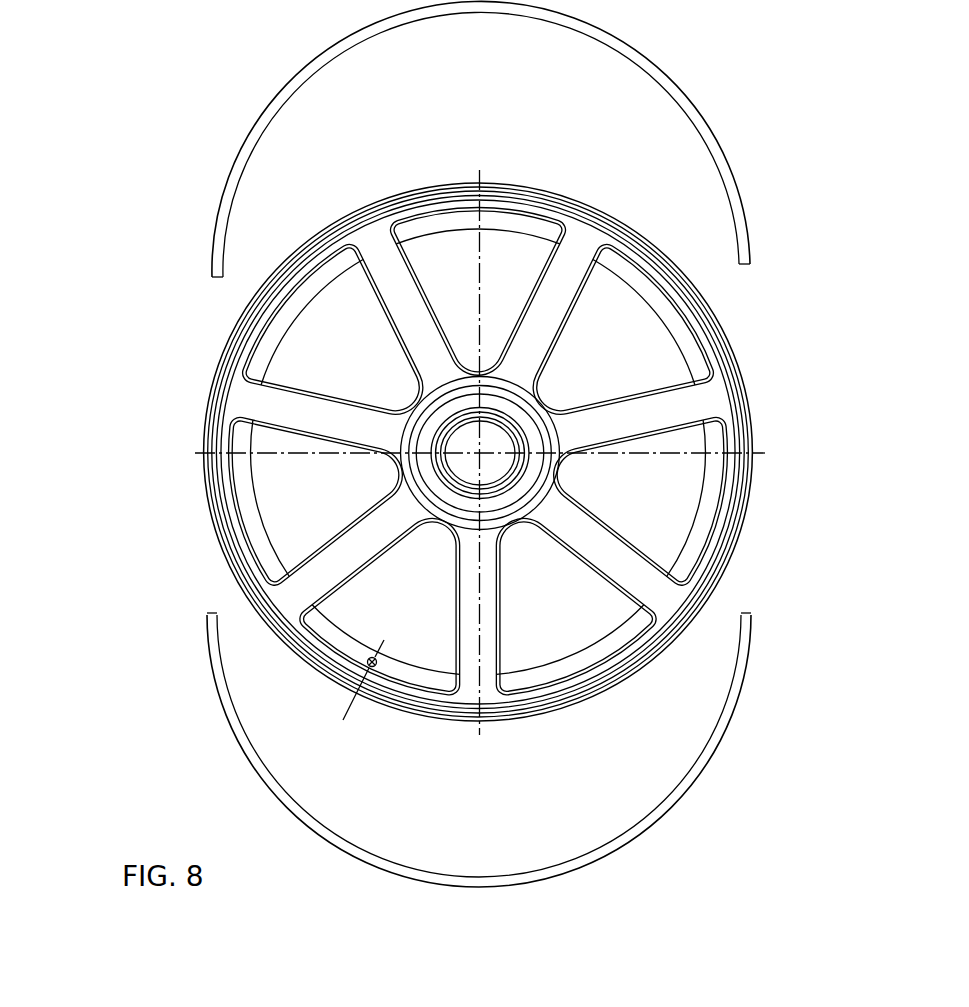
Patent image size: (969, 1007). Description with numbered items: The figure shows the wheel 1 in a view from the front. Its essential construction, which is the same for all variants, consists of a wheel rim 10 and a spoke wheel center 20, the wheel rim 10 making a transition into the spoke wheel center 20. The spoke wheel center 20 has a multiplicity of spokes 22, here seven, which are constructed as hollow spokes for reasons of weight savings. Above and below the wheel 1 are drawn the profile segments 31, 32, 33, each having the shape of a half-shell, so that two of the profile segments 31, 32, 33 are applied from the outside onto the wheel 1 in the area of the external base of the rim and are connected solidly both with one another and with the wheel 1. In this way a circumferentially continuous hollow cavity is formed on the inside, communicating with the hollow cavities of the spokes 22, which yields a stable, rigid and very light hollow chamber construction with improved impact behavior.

The wheel 1 is at (181, 132).
The wheel rim 10 is at (333, 686).
The spoke wheel center 20 is at (520, 541).
The spokes 22 is at (312, 415).
The profile segment 31 is at (457, 444).
The profile segment 32 is at (457, 444).
The profile segment 33 is at (801, 236).